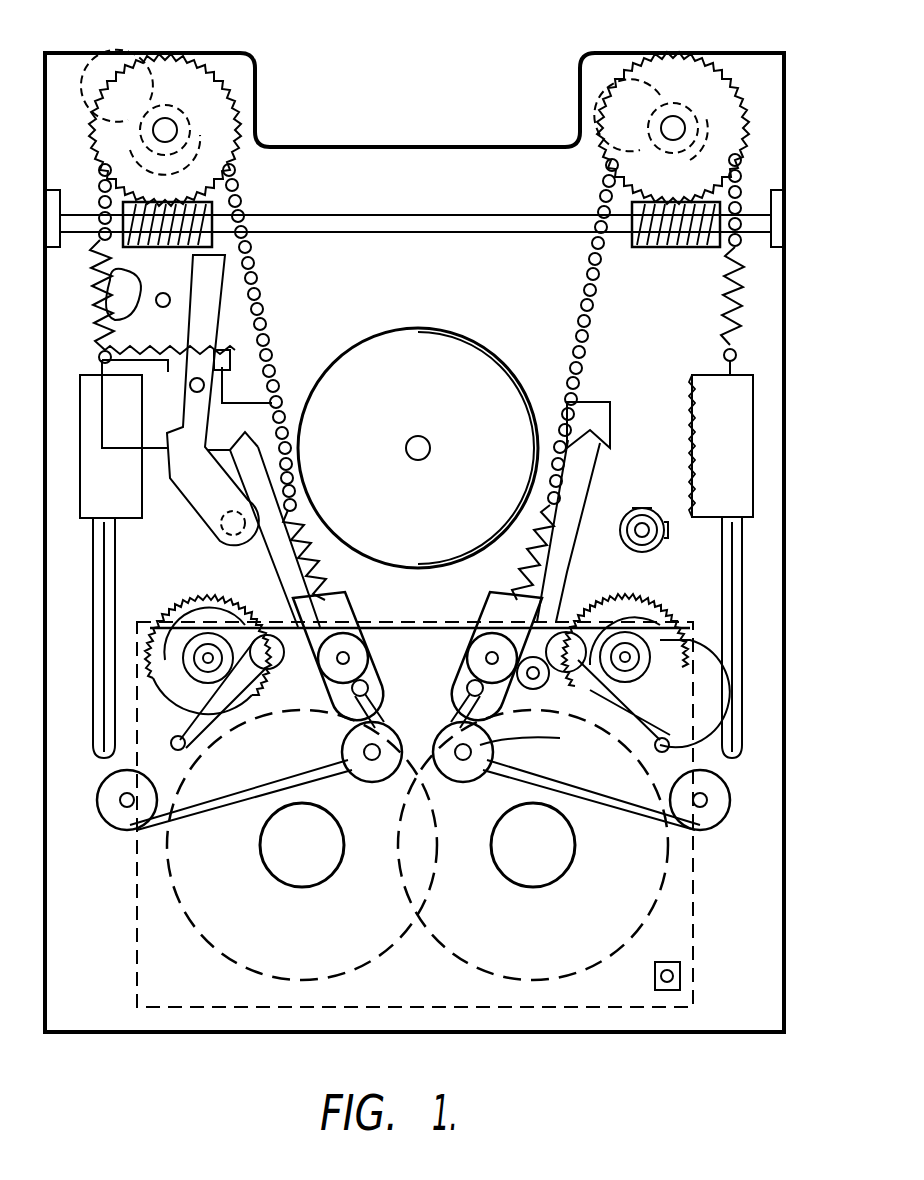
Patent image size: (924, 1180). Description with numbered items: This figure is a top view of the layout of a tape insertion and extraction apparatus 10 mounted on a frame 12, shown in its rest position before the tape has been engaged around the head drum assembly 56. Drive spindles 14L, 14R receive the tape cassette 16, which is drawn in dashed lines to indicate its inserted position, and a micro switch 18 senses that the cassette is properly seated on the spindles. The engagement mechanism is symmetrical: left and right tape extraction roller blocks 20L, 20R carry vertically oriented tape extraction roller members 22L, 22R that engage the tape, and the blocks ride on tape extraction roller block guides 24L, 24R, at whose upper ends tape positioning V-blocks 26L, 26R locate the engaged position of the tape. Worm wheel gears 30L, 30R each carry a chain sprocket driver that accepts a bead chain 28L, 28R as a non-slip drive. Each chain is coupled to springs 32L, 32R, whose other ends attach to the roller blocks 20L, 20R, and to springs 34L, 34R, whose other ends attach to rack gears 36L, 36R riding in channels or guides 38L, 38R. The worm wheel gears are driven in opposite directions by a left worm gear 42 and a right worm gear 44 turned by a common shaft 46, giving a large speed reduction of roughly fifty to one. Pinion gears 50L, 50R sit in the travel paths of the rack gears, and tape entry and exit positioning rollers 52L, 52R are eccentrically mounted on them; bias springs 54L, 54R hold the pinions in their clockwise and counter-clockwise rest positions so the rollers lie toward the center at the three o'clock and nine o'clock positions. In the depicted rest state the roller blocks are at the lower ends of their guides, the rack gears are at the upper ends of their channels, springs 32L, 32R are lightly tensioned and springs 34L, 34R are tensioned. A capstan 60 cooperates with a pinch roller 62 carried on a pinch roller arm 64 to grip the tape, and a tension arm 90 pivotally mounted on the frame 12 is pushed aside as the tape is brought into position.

The tape insertion and extraction apparatus 10 is at (420, 126).
The frame 12 is at (255, 53).
The left drive spindle 14L is at (295, 885).
The right drive spindle 14R is at (540, 885).
The tape cassette 16 is at (137, 964).
The micro switch 18 is at (680, 965).
The left tape extraction roller block 20L is at (370, 680).
The right tape extraction roller block 20R is at (460, 683).
The left tape extraction roller member 22L is at (360, 635).
The right tape extraction roller member 22R is at (475, 635).
The left tape extraction roller block guide 24L is at (255, 547).
The right tape extraction roller block guide 24R is at (580, 575).
The left tape positioning V-block 26L is at (255, 395).
The right tape positioning V-block 26R is at (590, 400).
The left bead chain 28L is at (256, 262).
The right bead chain 28R is at (590, 262).
The left worm wheel gear 30L is at (115, 70).
The right worm wheel gear 30R is at (643, 52).
The left spring 32L is at (318, 570).
The right spring 32R is at (520, 570).
The left spring 34L is at (100, 302).
The right spring 34R is at (720, 307).
The left rack gear 36L is at (130, 500).
The right rack gear 36R is at (742, 482).
The left channel or guide 38L is at (115, 560).
The right channel or guide 38R is at (722, 563).
The left worm gear 42 is at (212, 205).
The right worm gear 44 is at (672, 248).
The common shaft 46 is at (462, 213).
The left pinion gear 50L is at (258, 600).
The right pinion gear 50R is at (655, 592).
The left tape entry and exit positioning roller 52L is at (278, 665).
The right tape entry and exit positioning roller 52R is at (570, 600).
The left bias spring 54L is at (185, 748).
The right bias spring 54R is at (660, 750).
The head drum assembly 56 is at (448, 328).
The capstan 60 is at (660, 512).
The pinch roller 62 is at (530, 700).
The pinch roller arm 64 is at (700, 770).
The tension arm 90 is at (226, 305).